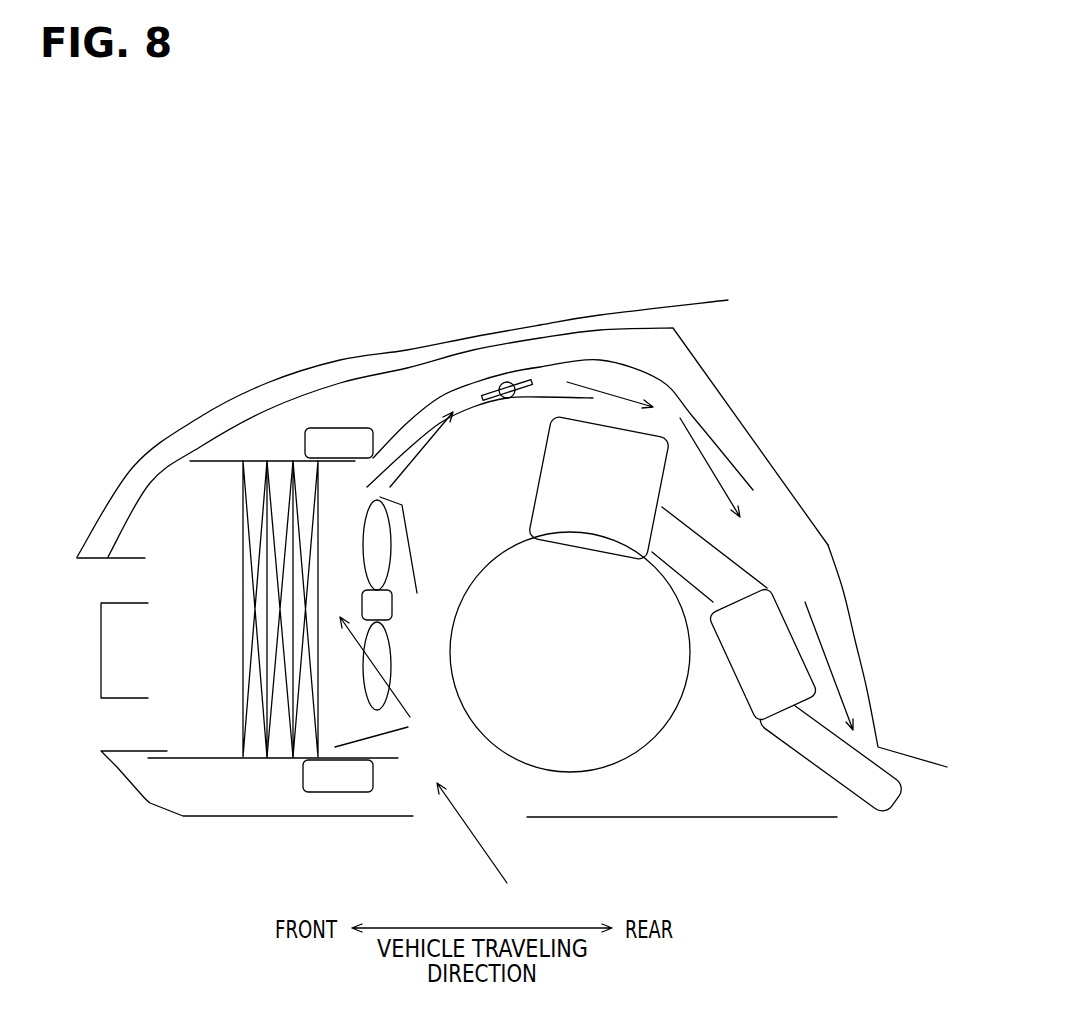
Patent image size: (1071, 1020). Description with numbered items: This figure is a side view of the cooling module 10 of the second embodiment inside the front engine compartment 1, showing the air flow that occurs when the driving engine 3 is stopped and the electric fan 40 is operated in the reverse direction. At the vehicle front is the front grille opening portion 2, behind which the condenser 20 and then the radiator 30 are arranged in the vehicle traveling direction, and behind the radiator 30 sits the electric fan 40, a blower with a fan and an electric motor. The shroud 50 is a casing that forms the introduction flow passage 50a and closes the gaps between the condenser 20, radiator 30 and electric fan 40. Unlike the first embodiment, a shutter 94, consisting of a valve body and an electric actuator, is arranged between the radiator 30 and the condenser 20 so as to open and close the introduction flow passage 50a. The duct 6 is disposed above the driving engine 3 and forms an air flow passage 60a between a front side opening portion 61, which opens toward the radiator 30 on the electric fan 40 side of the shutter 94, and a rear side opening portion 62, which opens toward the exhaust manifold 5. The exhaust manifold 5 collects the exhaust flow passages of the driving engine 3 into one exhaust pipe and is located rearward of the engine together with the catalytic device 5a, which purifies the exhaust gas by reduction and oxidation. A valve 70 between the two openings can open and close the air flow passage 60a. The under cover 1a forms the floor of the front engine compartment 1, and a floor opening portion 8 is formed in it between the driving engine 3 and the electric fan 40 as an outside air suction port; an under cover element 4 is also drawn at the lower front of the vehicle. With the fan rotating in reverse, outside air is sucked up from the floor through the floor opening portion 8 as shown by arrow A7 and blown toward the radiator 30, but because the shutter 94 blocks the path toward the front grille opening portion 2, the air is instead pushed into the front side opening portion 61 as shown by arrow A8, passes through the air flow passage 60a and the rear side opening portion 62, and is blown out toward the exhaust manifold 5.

The front engine compartment 1 is at (663, 783).
The under cover 1a is at (627, 818).
The front grille opening portion 2 is at (89, 580).
The driving engine 3 is at (580, 773).
The undercover 4 is at (148, 803).
The exhaust manifold 5 is at (703, 596).
The catalytic device 5a is at (782, 594).
The duct 6 is at (590, 355).
The floor opening portion 8 is at (498, 812).
The cooling module 10 is at (220, 778).
The condenser 20 is at (252, 757).
The radiator 30 is at (303, 757).
The electric fan 40 is at (393, 667).
The shroud 50 is at (185, 760).
The introduction flow passage 50a is at (343, 562).
The air flow passage 60a is at (467, 394).
The front side opening portion 61 is at (367, 474).
The rear side opening portion 62 is at (722, 448).
The valve 70 is at (520, 378).
The shutter 94 is at (283, 757).
The arrow A7 is at (415, 761).
The arrow A8 is at (422, 442).